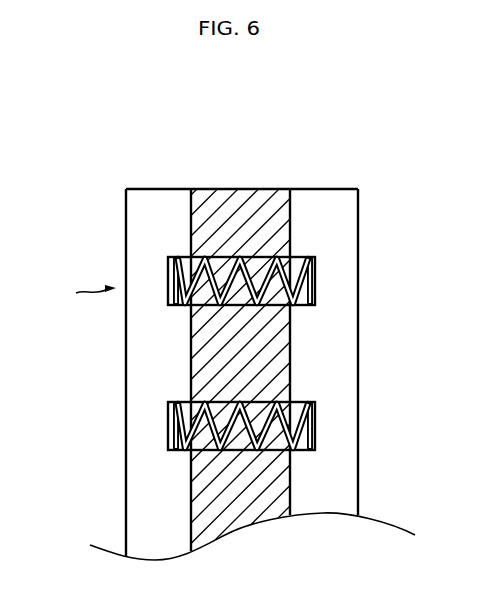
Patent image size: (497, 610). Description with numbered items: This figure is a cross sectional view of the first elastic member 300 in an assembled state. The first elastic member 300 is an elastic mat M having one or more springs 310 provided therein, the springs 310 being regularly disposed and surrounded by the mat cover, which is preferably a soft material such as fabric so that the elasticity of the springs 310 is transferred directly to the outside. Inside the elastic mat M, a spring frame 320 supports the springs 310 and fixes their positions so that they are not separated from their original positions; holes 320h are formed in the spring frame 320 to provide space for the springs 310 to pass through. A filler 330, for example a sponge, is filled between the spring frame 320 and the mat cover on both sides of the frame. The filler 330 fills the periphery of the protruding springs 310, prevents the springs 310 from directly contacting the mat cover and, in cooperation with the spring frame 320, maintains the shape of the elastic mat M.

The first elastic member 300 is at (85, 123).
The spring 310 is at (315, 280).
The spring frame 320 is at (216, 196).
The hole 320h is at (258, 255).
The filler 330 is at (163, 196).
The elastic mat M is at (87, 292).